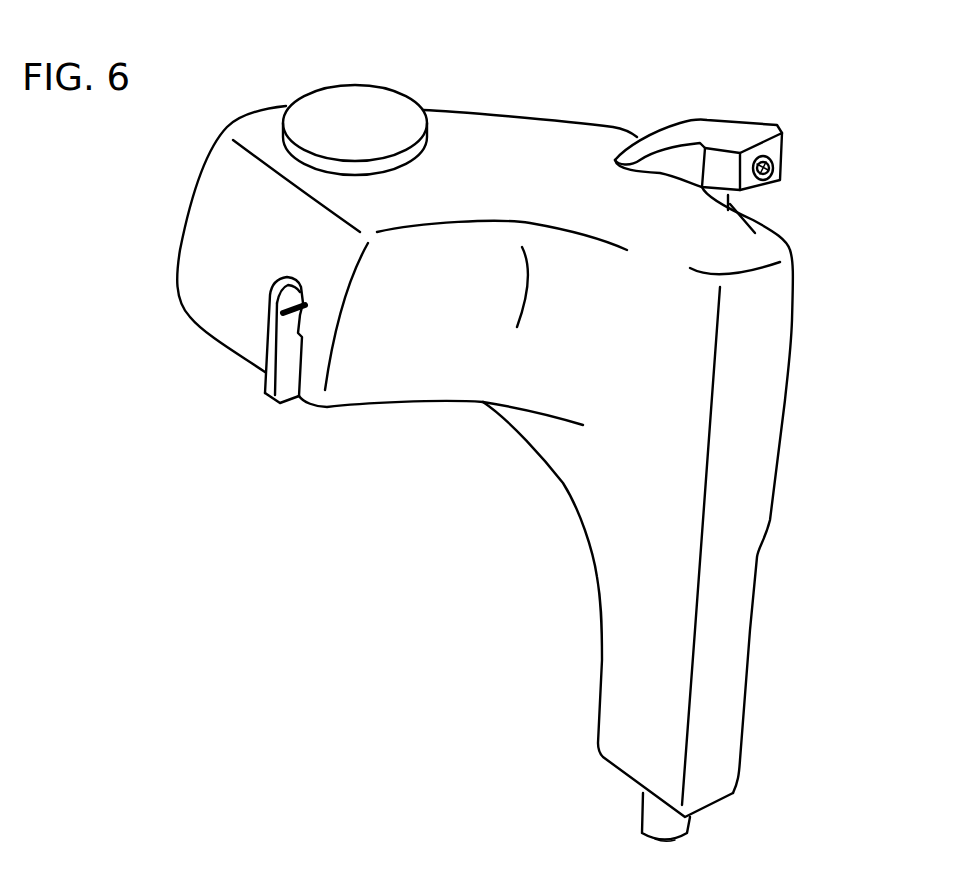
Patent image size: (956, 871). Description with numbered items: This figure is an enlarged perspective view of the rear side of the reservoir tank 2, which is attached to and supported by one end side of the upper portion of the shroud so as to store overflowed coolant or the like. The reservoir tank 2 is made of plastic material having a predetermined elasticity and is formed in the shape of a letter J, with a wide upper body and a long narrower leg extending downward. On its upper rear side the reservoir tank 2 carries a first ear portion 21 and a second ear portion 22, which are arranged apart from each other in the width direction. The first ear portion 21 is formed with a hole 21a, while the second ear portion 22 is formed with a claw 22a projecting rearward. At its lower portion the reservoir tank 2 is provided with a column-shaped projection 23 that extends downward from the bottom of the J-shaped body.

The reservoir tank 2 is at (580, 465).
The first ear portion 21 is at (765, 105).
The hole 21a is at (778, 162).
The second ear portion 22 is at (273, 390).
The claw 22a is at (306, 307).
The column-shaped projection 23 is at (657, 822).